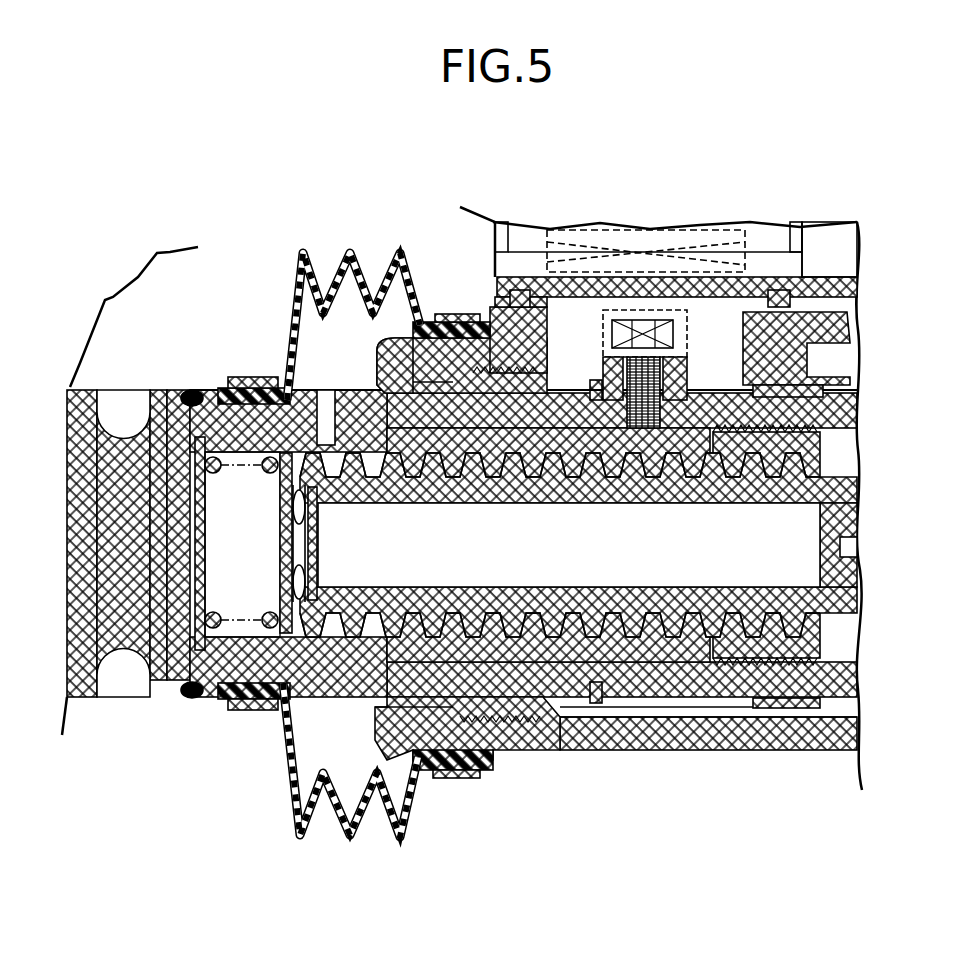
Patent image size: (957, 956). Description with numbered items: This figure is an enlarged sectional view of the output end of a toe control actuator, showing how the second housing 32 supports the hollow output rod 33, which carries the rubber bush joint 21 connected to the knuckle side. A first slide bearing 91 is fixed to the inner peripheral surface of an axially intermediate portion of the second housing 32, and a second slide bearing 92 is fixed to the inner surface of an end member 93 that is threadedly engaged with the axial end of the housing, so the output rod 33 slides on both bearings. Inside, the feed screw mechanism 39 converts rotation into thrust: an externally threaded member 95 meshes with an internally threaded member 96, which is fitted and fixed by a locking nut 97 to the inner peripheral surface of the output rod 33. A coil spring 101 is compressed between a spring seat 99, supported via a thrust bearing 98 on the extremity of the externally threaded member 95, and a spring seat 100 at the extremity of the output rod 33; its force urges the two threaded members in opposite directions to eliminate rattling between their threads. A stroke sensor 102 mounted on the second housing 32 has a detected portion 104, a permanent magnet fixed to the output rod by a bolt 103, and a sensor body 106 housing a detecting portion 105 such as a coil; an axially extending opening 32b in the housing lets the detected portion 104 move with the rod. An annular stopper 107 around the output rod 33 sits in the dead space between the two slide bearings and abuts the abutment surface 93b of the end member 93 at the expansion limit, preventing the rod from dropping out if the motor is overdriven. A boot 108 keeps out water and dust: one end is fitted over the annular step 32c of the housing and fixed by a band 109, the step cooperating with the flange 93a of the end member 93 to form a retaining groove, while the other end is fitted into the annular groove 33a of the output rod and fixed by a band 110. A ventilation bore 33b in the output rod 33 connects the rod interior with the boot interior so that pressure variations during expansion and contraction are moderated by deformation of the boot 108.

The rubber bush joint 21 is at (114, 428).
The second housing 32 is at (710, 755).
The axially extending opening 32b is at (548, 325).
The annular step 32c is at (476, 312).
The output rod 33 is at (318, 702).
The annular groove 33a is at (232, 388).
The ventilation bore 33b is at (292, 303).
The feed screw mechanism 39 is at (739, 706).
The first slide bearing 91 is at (835, 332).
The second slide bearing 92 is at (390, 343).
The end member 93 is at (512, 724).
The flange 93a is at (382, 335).
The abutment surface 93b is at (540, 712).
The externally threaded member 95 is at (597, 585).
The internally threaded member 96 is at (563, 610).
The locking nut 97 is at (757, 500).
The thrust bearing 98 is at (312, 522).
The spring seat 99 is at (278, 548).
The spring seat 100 is at (210, 600).
The coil spring 101 is at (270, 476).
The stroke sensor 102 is at (838, 243).
The bolt 103 is at (683, 380).
The detected portion 104 is at (722, 262).
The detecting portion 105 is at (650, 230).
The sensor body 106 is at (520, 230).
The annular stopper 107 is at (602, 704).
The boot 108 is at (326, 393).
The band 109 is at (458, 313).
The band 110 is at (242, 377).